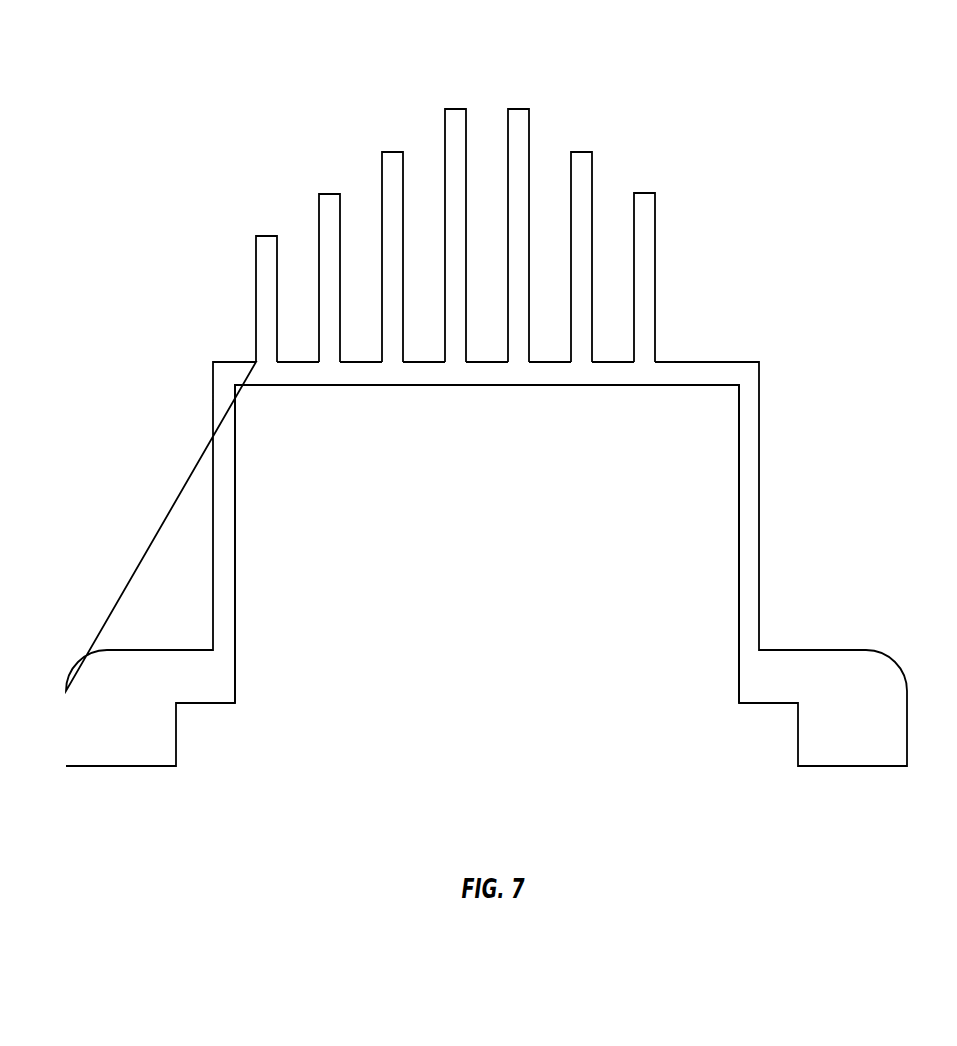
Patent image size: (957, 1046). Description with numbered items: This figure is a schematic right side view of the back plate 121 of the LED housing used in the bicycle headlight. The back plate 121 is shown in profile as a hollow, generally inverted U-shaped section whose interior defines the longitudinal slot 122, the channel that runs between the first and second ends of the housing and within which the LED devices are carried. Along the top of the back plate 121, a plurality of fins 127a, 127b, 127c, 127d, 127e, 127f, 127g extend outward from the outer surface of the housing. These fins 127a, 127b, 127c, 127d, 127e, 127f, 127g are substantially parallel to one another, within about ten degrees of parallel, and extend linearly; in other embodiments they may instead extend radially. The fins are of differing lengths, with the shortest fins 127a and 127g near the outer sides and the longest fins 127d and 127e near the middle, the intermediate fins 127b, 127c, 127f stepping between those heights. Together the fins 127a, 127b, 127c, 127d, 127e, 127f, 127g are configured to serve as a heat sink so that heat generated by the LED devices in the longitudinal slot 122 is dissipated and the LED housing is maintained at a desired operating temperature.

The back plate 121 is at (503, 395).
The longitudinal slot 122 is at (499, 607).
The fin 127a is at (275, 258).
The fin 127b is at (327, 205).
The fin 127c is at (386, 173).
The fin 127d is at (446, 128).
The fin 127e is at (512, 128).
The fin 127f is at (580, 158).
The fin 127g is at (645, 198).